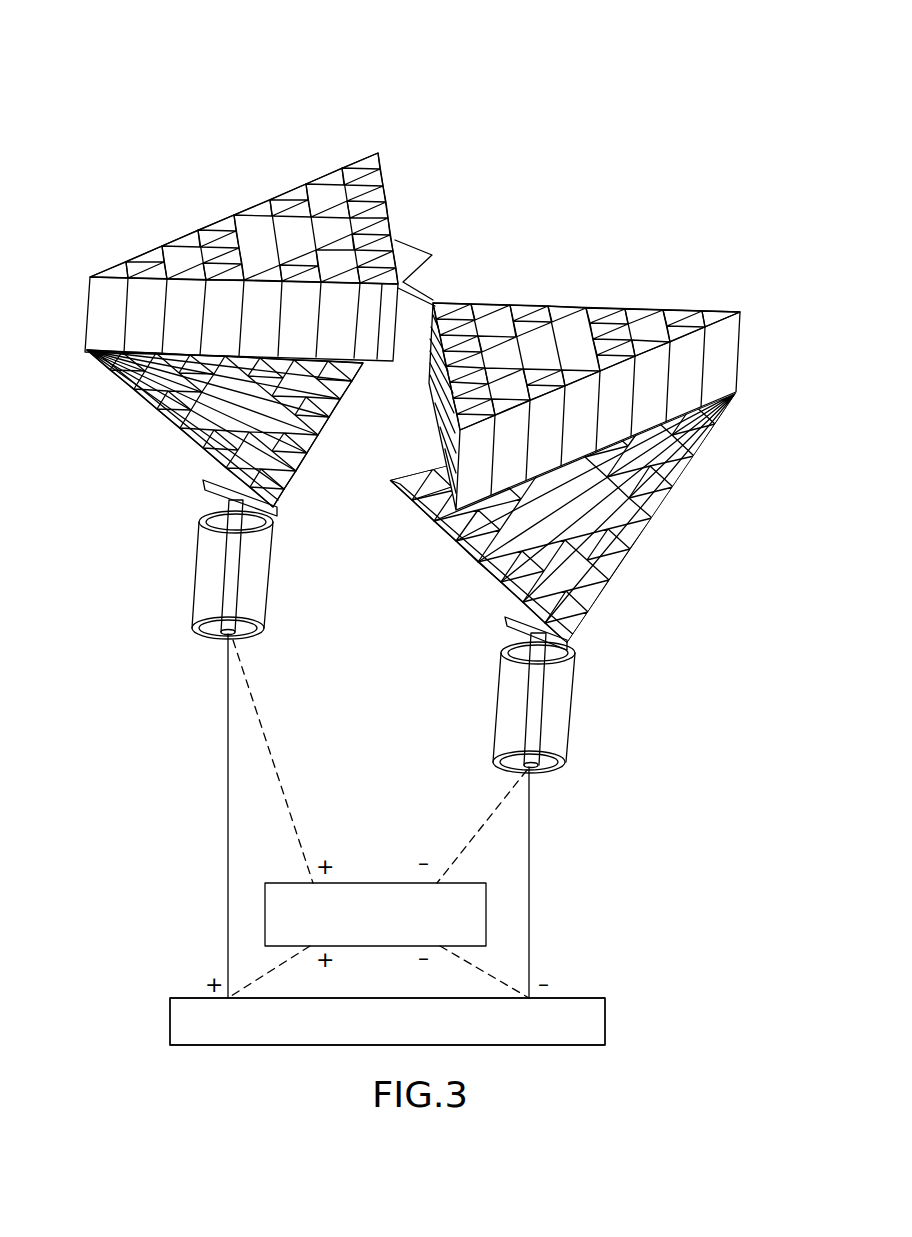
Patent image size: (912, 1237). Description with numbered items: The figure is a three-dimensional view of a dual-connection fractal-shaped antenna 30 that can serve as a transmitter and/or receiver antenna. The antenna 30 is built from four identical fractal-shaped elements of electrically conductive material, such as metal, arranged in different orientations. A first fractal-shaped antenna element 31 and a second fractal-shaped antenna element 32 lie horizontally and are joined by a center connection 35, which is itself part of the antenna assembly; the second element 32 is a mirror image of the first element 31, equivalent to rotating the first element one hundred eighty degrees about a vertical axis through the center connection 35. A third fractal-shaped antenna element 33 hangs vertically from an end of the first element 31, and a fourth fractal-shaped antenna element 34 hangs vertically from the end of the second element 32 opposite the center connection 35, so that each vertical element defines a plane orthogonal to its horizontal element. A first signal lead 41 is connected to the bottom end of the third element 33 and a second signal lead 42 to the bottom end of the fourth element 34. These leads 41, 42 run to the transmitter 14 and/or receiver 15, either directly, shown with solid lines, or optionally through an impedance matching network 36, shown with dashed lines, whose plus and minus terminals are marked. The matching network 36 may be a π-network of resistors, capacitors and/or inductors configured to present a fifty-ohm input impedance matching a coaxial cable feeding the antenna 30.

The dual-connection fractal-shaped antenna 30 is at (417, 365).
The first fractal-shaped antenna element 31 is at (330, 178).
The second fractal-shaped antenna element 32 is at (662, 312).
The third fractal-shaped antenna element 33 is at (175, 442).
The fourth fractal-shaped antenna element 34 is at (645, 533).
The center connection 35 is at (433, 293).
The impedance matching network 36 is at (428, 940).
The first signal lead 41 is at (240, 575).
The second signal lead 42 is at (527, 705).
The transmitter 14 is at (553, 1036).
The receiver 15 is at (553, 1036).